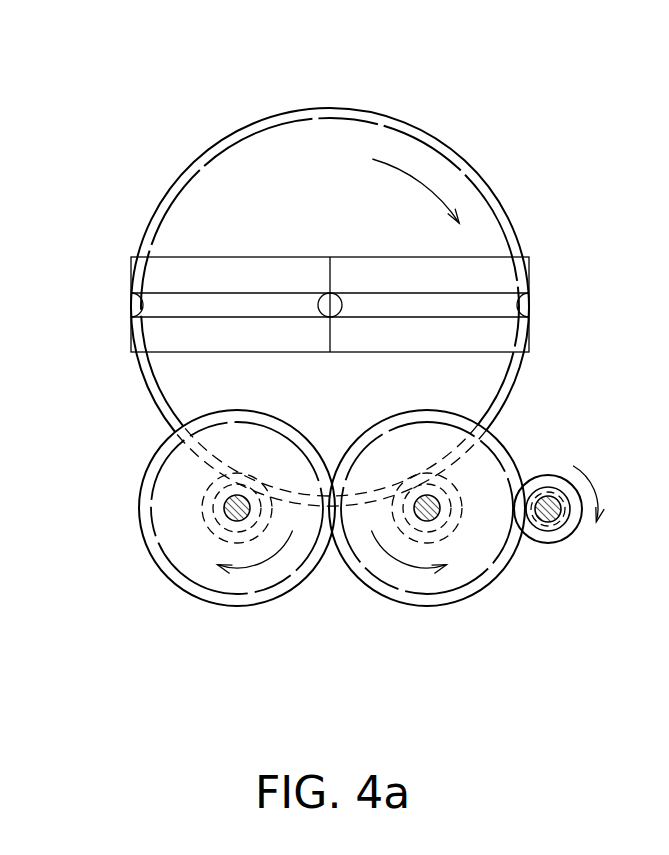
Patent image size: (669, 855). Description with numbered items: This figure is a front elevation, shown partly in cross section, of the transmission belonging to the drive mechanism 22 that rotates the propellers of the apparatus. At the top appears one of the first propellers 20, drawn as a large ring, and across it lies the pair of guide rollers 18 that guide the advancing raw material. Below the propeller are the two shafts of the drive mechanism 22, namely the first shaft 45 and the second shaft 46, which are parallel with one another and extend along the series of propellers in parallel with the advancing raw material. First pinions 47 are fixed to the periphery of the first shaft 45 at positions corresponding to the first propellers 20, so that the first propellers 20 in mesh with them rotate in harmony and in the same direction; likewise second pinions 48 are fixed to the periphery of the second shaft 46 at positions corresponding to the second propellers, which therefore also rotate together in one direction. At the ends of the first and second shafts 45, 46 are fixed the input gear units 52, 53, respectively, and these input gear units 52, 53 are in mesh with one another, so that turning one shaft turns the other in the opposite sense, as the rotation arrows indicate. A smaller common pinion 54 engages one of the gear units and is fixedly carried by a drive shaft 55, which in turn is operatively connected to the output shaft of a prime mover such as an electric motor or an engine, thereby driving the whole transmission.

The guide rollers 18 is at (477, 275).
The first propellers 20 is at (292, 110).
The drive mechanism 22 is at (537, 417).
The first shaft 45 is at (435, 517).
The second shaft 46 is at (229, 517).
The first pinions 47 is at (460, 526).
The second pinions 48 is at (212, 478).
The input gear unit 52 is at (403, 608).
The input gear unit 53 is at (225, 608).
The common pinion 54 is at (543, 472).
The drive shaft 55 is at (556, 515).